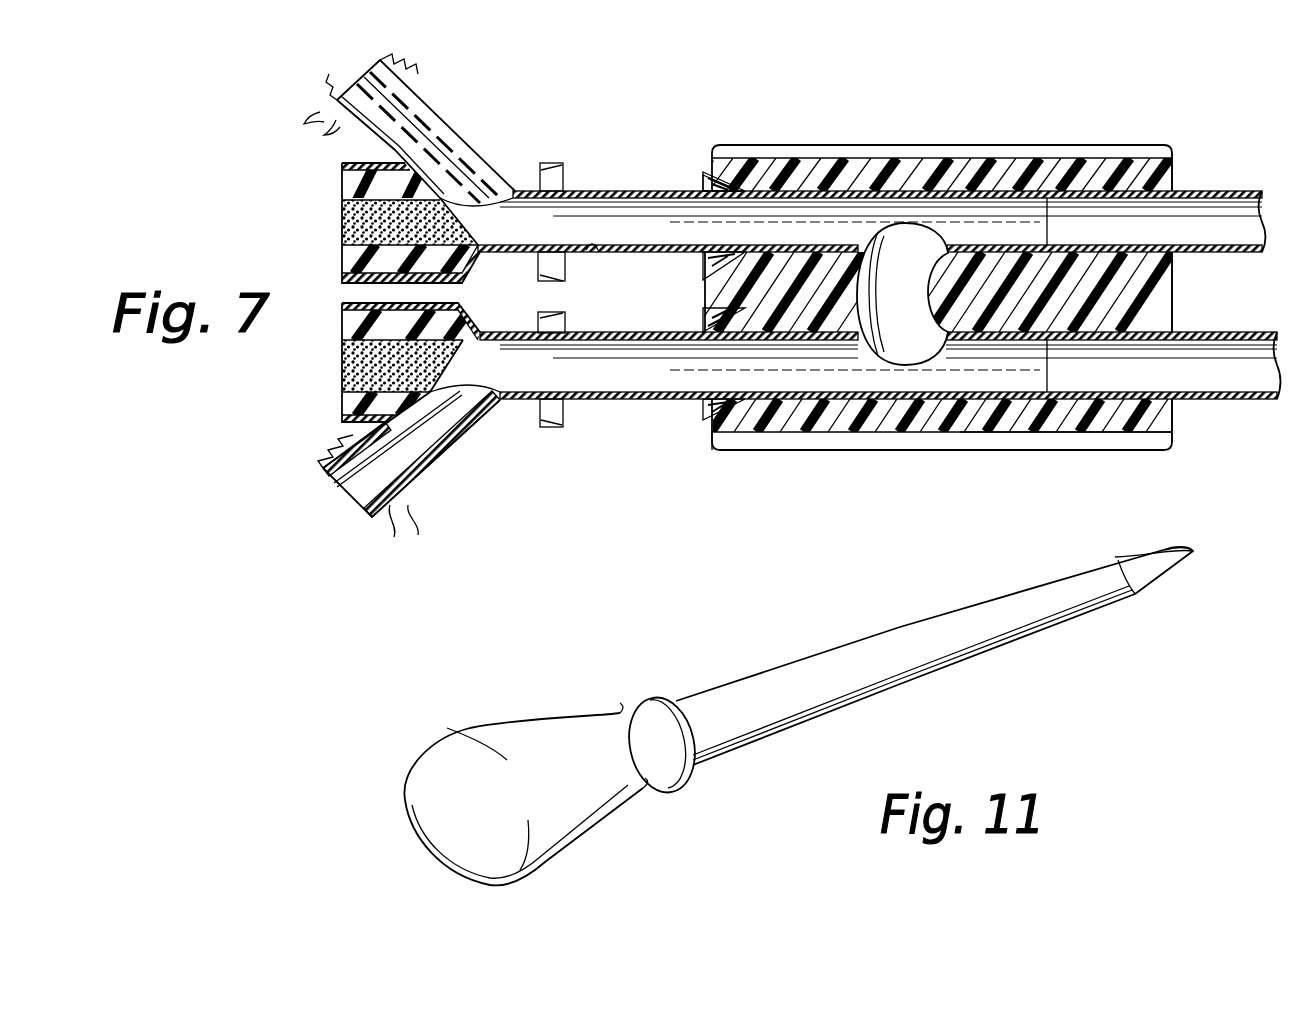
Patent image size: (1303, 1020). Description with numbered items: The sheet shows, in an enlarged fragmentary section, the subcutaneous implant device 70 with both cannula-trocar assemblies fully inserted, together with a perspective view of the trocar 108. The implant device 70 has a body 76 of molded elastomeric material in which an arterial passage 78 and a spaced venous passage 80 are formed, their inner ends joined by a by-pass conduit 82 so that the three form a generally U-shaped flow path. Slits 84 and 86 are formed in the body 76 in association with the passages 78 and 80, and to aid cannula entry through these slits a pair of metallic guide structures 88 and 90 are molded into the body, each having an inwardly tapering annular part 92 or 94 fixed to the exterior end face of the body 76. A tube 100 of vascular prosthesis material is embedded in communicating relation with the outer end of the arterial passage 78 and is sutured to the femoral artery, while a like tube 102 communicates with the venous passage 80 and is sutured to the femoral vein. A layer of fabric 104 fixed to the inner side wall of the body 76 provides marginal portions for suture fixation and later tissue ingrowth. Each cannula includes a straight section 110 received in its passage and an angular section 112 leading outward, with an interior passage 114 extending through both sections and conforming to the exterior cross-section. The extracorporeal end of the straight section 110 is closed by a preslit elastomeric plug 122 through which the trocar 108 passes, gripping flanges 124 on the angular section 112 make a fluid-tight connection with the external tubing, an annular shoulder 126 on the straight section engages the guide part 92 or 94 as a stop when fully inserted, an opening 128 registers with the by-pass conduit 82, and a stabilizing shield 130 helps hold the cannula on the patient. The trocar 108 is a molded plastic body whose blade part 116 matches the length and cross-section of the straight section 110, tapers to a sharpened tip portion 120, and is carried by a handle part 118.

In FIG. 7, the implant device 70 is at (731, 140).
In FIG. 7, the body 76 is at (892, 190).
In FIG. 7, the arterial passage 78 is at (1004, 167).
In FIG. 7, the venous passage 80 is at (980, 434).
In FIG. 7, the by-pass conduit 82 is at (869, 346).
In FIG. 7, the slit 84 is at (803, 203).
In FIG. 7, the slit 86 is at (862, 440).
In FIG. 7, the guide structure 88 is at (700, 165).
In FIG. 7, the guide structure 90 is at (700, 435).
In FIG. 7, the inwardly tapering annular part 92 is at (704, 262).
In FIG. 7, the inwardly tapering annular part 94 is at (702, 401).
In FIG. 7, the tube 100 is at (1262, 160).
In FIG. 7, the tube 102 is at (1258, 400).
In FIG. 7, the layer of fabric 104 is at (1146, 150).
In FIG. 11, the trocar 108 is at (1196, 543).
In FIG. 7, the straight section 110 is at (598, 190).
In FIG. 7, the angular section 112 is at (440, 125).
In FIG. 7, the interior passage 114 is at (592, 252).
In FIG. 11, the blade part 116 is at (947, 652).
In FIG. 11, the handle part 118 is at (553, 730).
In FIG. 11, the sharpened tip portion 120 is at (1194, 553).
In FIG. 7, the diaphragm or plug of elastomeric material 122 is at (350, 217).
In FIG. 7, the gripping flanges 124 is at (330, 115).
In FIG. 7, the annular shoulder 126 is at (703, 181).
In FIG. 7, the opening 128 is at (901, 226).
In FIG. 7, the stabilizing shield 130 is at (545, 163).